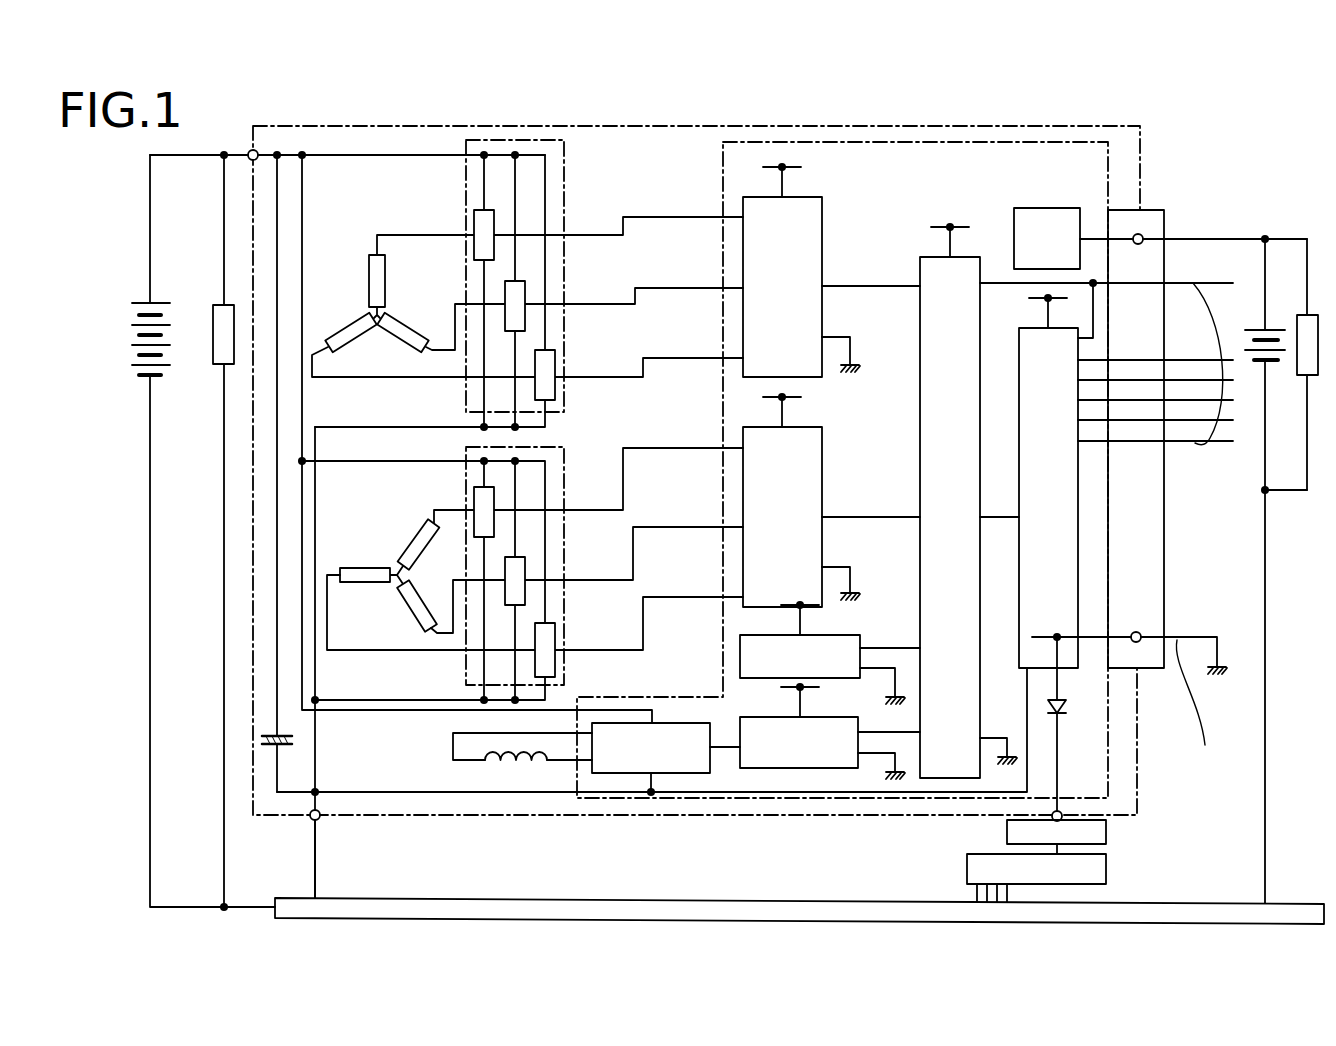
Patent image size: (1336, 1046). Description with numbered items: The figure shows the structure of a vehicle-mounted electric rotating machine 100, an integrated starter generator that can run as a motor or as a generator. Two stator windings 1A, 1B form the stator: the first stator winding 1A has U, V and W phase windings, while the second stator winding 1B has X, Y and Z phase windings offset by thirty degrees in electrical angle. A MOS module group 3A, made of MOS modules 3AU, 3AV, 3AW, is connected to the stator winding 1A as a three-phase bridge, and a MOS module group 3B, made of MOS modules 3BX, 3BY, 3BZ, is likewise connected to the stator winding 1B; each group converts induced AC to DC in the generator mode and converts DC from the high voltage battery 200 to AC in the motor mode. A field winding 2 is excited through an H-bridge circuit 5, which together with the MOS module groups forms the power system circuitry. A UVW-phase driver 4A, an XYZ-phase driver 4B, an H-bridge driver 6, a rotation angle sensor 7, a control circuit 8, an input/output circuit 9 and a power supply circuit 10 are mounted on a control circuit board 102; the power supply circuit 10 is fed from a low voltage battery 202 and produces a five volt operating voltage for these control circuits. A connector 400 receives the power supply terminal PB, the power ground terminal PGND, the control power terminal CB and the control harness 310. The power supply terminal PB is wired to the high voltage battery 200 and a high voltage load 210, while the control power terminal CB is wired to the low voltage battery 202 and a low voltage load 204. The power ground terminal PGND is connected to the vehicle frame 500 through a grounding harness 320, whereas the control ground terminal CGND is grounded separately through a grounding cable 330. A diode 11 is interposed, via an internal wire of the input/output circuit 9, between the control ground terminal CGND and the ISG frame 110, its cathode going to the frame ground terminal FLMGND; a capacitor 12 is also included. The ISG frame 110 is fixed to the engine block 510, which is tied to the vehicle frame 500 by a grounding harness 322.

The electric rotating machine 100 is at (1028, 128).
The control circuit board 102 is at (1110, 160).
The power supply circuit 10 is at (1053, 208).
The control circuit 8 is at (963, 257).
The input/output circuit 9 is at (1032, 328).
The rotation angle sensor 7 is at (845, 636).
The H-bridge driver 6 is at (820, 717).
The H-bridge circuit 5 is at (693, 723).
The field winding 2 is at (515, 762).
The diode 11 is at (1063, 703).
The capacitor 12 is at (268, 748).
The UVW-phase driver 4A is at (797, 197).
The XYZ-phase driver 4B is at (797, 427).
The MOS module group 3A is at (484, 285).
The MOS module group 3B is at (476, 561).
The MOS module 3AU is at (475, 209).
The MOS module 3AV is at (523, 293).
The MOS module 3AW is at (553, 362).
The MOS module 3BX is at (475, 499).
The MOS module 3BY is at (523, 570).
The MOS module 3BZ is at (555, 658).
The stator winding 1A is at (370, 313).
The stator winding 1B is at (388, 557).
The high voltage battery 200 is at (159, 302).
The high voltage load 210 is at (222, 366).
The low voltage battery 202 is at (1262, 362).
The low voltage load 204 is at (1313, 313).
The control harness 310 is at (1208, 266).
The grounding harness 320 is at (312, 872).
The grounding harness 322 is at (977, 893).
The grounding cable 330 is at (1200, 706).
The connector 400 is at (1166, 518).
The vehicle frame 500 is at (516, 898).
The engine block 510 is at (1106, 868).
The ISG frame 110 is at (1106, 832).
The power supply terminal PB is at (347, 143).
The control power terminal CB is at (1141, 238).
The power ground terminal PGND is at (354, 826).
The control ground terminal CGND is at (1141, 637).
The frame ground terminal FLMGND is at (1062, 817).